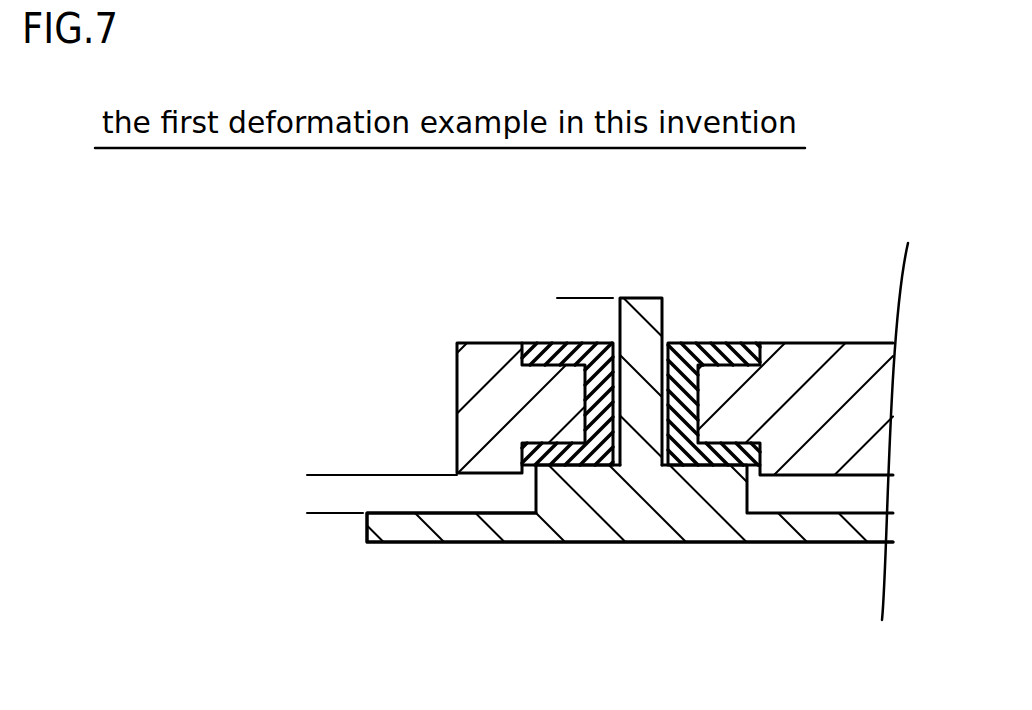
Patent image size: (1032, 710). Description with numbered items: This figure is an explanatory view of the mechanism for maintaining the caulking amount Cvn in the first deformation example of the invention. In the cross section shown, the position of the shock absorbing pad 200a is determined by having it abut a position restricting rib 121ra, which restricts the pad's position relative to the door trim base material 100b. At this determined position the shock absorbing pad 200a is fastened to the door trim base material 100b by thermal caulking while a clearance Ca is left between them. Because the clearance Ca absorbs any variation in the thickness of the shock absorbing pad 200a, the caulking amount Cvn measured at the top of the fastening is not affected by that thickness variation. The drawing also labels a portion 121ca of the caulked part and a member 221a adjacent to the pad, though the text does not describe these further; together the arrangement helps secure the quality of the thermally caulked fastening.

The shock absorbing pad 200a is at (495, 343).
The stator side block 221a is at (705, 343).
The rotor core projection 121ca is at (647, 298).
The position restricting rib 121ra is at (537, 490).
The door trim base material 100b is at (365, 533).
The clearance Ca is at (340, 525).
The caulking amount Cvn is at (585, 331).